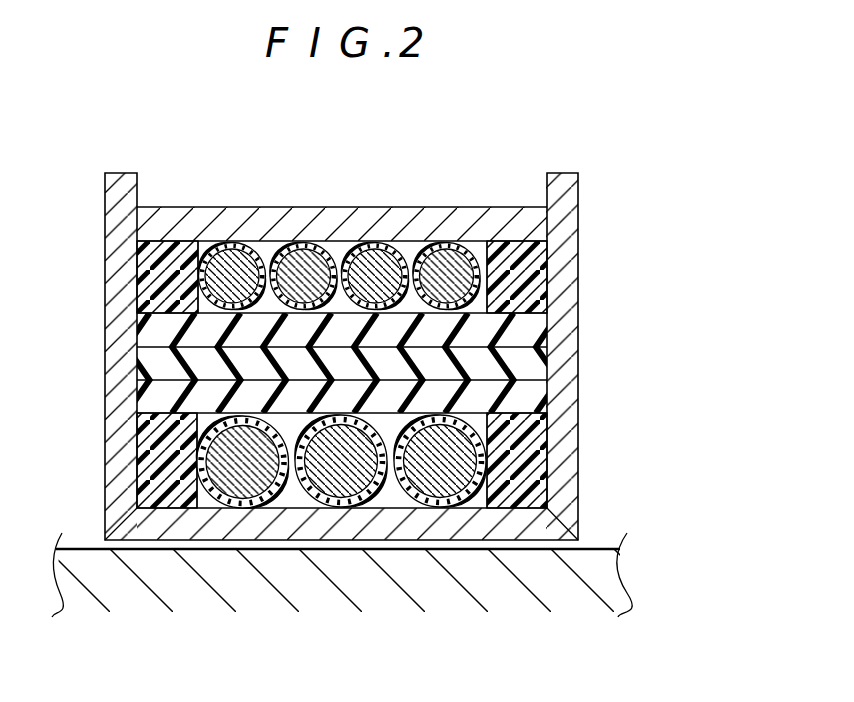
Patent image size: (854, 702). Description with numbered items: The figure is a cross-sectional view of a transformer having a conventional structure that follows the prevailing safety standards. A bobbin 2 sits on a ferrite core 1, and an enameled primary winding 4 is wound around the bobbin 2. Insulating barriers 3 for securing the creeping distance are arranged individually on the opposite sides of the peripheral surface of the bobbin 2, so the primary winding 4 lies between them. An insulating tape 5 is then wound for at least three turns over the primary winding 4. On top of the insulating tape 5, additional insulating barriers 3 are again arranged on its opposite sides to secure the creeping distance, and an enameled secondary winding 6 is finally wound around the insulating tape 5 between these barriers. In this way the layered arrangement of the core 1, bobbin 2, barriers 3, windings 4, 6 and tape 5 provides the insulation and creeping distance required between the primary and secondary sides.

The ferrite core 1 is at (108, 572).
The bobbin 2 is at (565, 232).
The insulating barriers 3 is at (155, 447).
The primary winding 4 is at (370, 500).
The insulating tape 5 is at (525, 398).
The secondary winding 6 is at (352, 250).